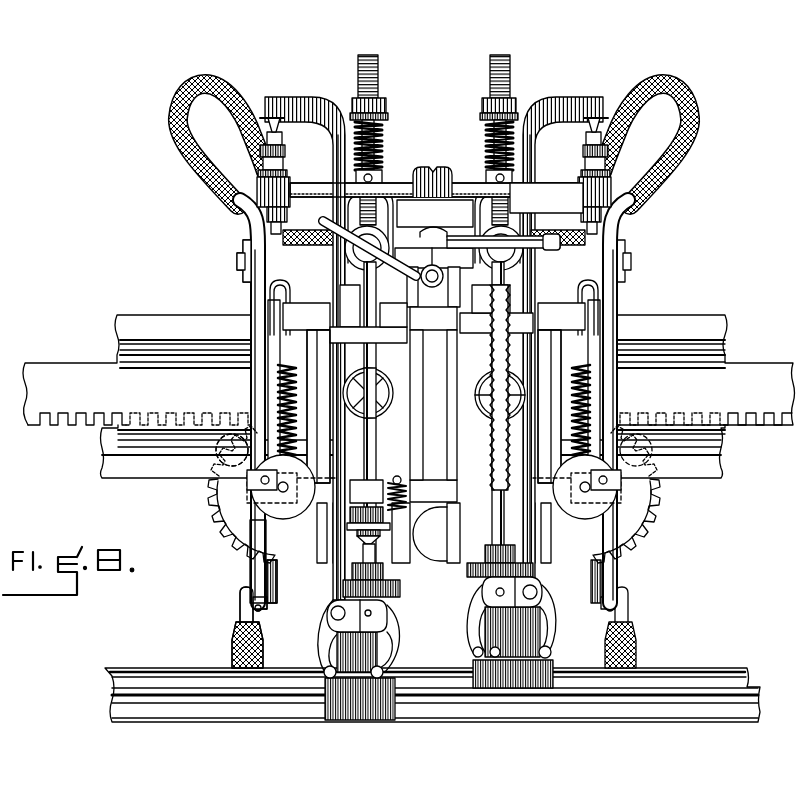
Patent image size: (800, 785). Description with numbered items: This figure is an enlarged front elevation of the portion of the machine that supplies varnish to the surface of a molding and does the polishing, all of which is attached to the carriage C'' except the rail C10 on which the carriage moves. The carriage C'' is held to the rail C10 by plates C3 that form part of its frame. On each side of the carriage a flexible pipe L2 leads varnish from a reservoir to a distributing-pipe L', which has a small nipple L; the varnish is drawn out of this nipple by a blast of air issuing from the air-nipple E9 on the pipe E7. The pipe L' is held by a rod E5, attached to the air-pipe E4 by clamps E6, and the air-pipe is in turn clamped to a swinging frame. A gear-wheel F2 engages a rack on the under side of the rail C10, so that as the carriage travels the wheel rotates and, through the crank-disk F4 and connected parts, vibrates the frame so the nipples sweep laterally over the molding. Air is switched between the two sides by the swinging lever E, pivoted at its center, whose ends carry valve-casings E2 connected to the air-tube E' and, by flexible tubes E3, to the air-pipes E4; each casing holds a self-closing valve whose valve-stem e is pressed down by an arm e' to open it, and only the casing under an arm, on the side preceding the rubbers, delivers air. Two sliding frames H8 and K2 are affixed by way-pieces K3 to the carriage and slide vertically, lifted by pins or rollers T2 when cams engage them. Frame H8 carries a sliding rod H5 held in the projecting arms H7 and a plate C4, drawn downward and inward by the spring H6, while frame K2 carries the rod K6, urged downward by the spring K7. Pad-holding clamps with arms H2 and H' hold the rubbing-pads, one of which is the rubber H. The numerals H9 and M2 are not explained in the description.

The swinging lever E is at (434, 184).
The air-tube E' is at (558, 252).
The valve-casing E2 is at (285, 155).
The flexible tube E3 is at (204, 163).
The air-pipe E4 is at (252, 220).
The rod E5 is at (252, 569).
The clamp E6 is at (240, 266).
The pipe E7 is at (281, 581).
The air-nipple E9 is at (267, 609).
The valve-stem e is at (429, 131).
The arm e' is at (434, 337).
The plate C3 is at (435, 218).
The plate C4 is at (361, 543).
The rail C10 is at (179, 396).
The carriage C'' is at (433, 405).
The rubbing-pad H is at (439, 663).
The clamp arm H' is at (437, 627).
The clamp arm H2 is at (323, 634).
The sliding rod H5 is at (350, 303).
The spring H6 is at (408, 485).
The projecting arm H7 is at (368, 412).
The sliding frame H8 is at (337, 431).
The column H9 is at (407, 268).
The sliding frame K2 is at (509, 381).
The way-piece K3 is at (423, 423).
The sliding rod K6 is at (491, 299).
The spring K7 is at (546, 333).
The pin or roller T2 is at (477, 380).
The gear-wheel F2 is at (208, 501).
The crank-disk F4 is at (434, 488).
The nipple L is at (265, 624).
The distributing-pipe L' is at (420, 610).
The flexible pipe L2 is at (233, 642).
The base rail M2 is at (697, 680).